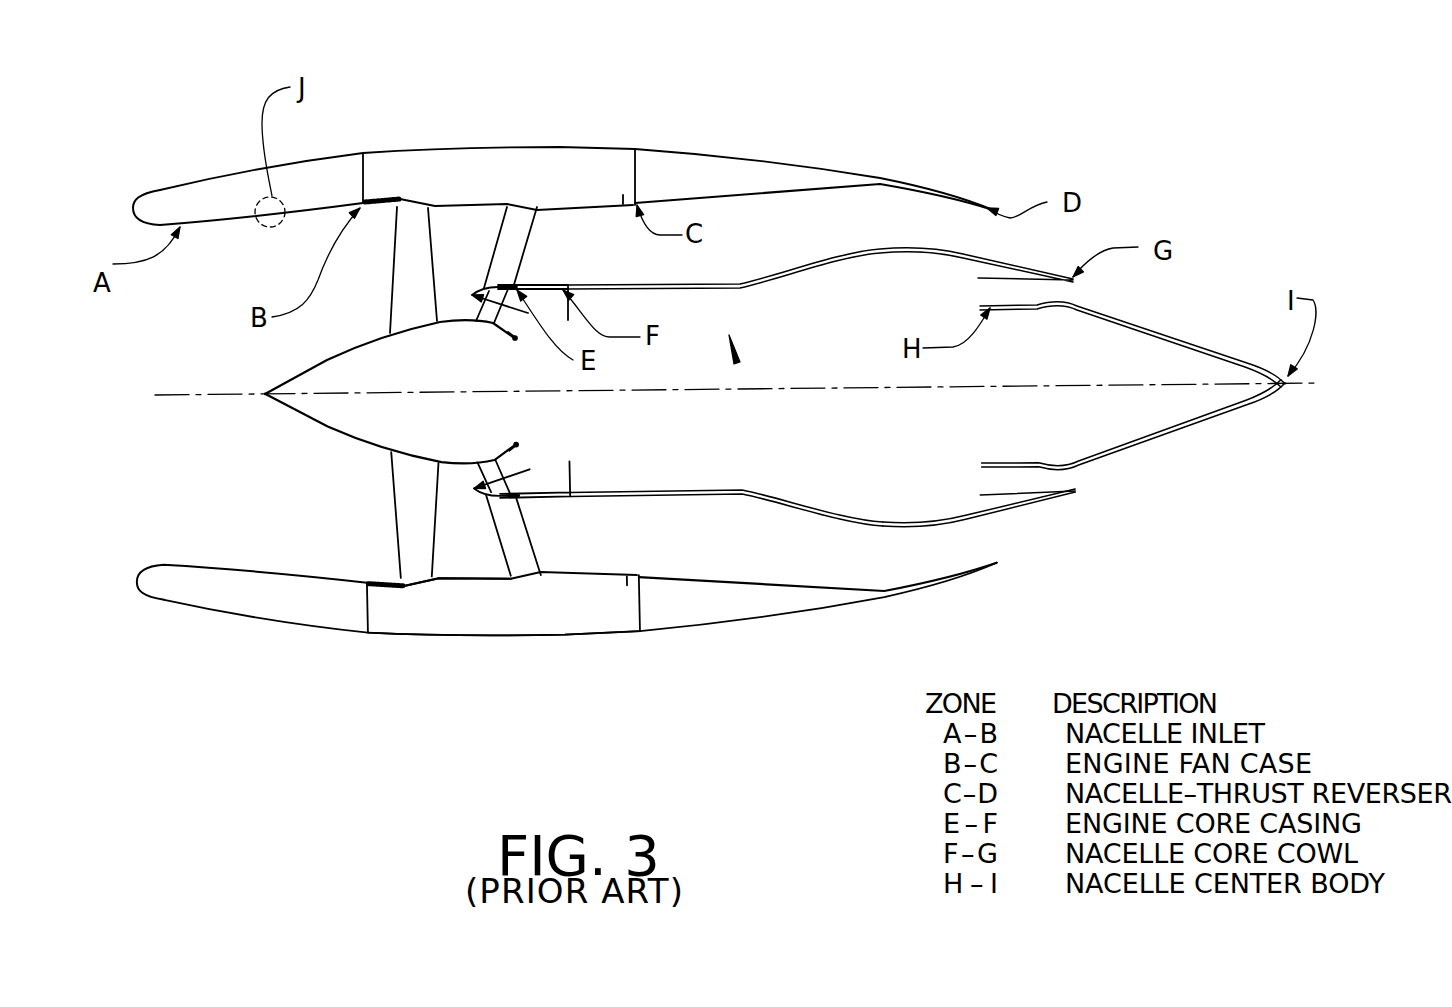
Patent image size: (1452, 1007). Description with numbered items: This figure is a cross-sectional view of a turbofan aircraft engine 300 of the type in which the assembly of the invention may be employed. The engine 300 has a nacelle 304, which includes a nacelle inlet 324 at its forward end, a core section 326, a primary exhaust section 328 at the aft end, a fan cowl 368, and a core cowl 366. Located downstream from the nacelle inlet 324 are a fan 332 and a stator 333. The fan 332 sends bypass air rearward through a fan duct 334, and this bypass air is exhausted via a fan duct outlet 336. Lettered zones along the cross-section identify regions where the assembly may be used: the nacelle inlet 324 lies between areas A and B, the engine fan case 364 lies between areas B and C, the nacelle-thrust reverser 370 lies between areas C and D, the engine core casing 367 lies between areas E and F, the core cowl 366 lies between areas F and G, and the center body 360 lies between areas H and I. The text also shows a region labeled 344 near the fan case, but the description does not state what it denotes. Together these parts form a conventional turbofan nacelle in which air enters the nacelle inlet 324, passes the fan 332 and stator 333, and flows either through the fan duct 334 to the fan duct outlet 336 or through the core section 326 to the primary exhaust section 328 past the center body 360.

The engine 300 is at (826, 128).
The nacelle 304 is at (213, 172).
The nacelle inlet 324 is at (222, 227).
The core section 326 is at (753, 500).
The primary exhaust section 328 is at (1047, 480).
The fan 332 is at (393, 512).
The stator 333 is at (527, 529).
The fan duct 334 is at (857, 570).
The fan duct outlet 336 is at (927, 555).
The fan case attachment 344 is at (377, 208).
The center body 360 is at (1205, 422).
The engine fan case 364 is at (470, 587).
The core cowl 366 is at (750, 277).
The engine core casing 367 is at (537, 287).
The fan cowl 368 is at (533, 640).
The nacelle-thrust reverser 370 is at (682, 613).